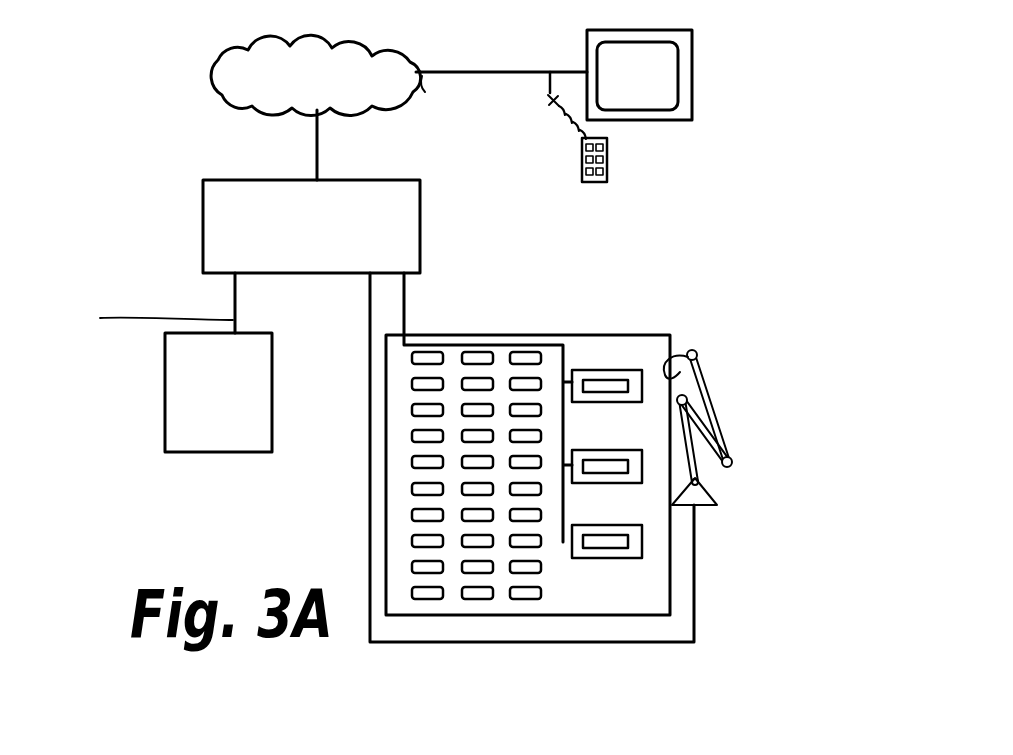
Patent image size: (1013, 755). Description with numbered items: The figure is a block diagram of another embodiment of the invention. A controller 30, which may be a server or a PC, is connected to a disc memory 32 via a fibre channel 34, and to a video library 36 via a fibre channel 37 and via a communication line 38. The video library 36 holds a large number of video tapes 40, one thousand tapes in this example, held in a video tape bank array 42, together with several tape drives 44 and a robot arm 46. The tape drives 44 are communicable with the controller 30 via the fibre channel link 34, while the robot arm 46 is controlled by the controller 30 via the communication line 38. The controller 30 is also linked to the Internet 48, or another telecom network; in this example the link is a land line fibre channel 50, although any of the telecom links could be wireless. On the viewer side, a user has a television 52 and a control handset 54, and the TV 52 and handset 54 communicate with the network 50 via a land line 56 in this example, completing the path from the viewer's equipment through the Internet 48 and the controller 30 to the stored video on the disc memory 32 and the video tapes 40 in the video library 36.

The controller 30 is at (320, 240).
The disc memory 32 is at (225, 428).
The fibre channel 34 is at (233, 305).
The video library 36 is at (591, 320).
The fibre channel 37 is at (405, 312).
The communication line 38 is at (370, 372).
The video tapes 40 is at (523, 597).
The video tape bank array 42 is at (565, 593).
The tape drives 44 is at (618, 370).
The robot arm 46 is at (715, 428).
The Internet 48 is at (323, 84).
The land line (fibre channel) 50 is at (342, 152).
The television 52 is at (687, 88).
The control handset 54 is at (609, 162).
The land line 56 is at (502, 72).